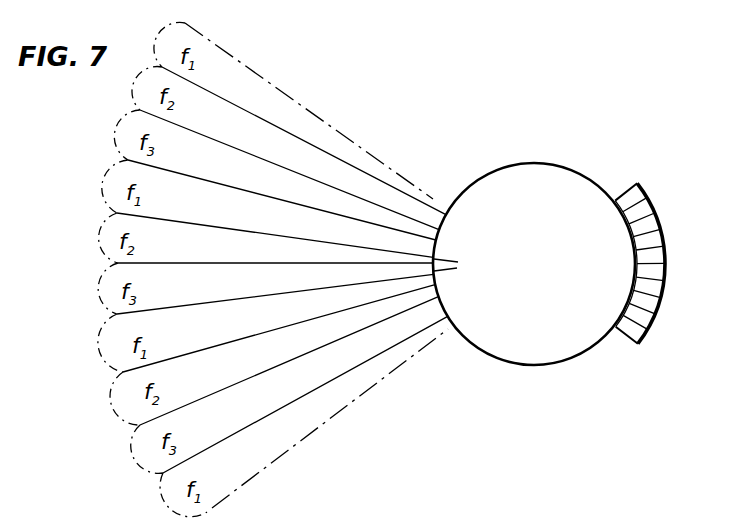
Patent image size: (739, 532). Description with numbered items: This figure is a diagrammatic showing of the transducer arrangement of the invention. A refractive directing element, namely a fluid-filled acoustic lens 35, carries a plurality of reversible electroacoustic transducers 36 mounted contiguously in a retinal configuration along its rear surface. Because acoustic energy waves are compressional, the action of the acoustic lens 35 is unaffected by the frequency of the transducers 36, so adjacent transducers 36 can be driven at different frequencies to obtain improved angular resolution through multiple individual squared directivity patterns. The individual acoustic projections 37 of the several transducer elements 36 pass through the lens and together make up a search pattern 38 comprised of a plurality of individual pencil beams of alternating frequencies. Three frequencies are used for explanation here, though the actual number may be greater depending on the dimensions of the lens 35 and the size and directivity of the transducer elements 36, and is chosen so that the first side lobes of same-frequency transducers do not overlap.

The acoustic lens 35 is at (572, 166).
The reversible electroacoustic transducers 36 is at (662, 234).
The acoustic projections 37 is at (436, 249).
The search pattern 38 is at (321, 426).